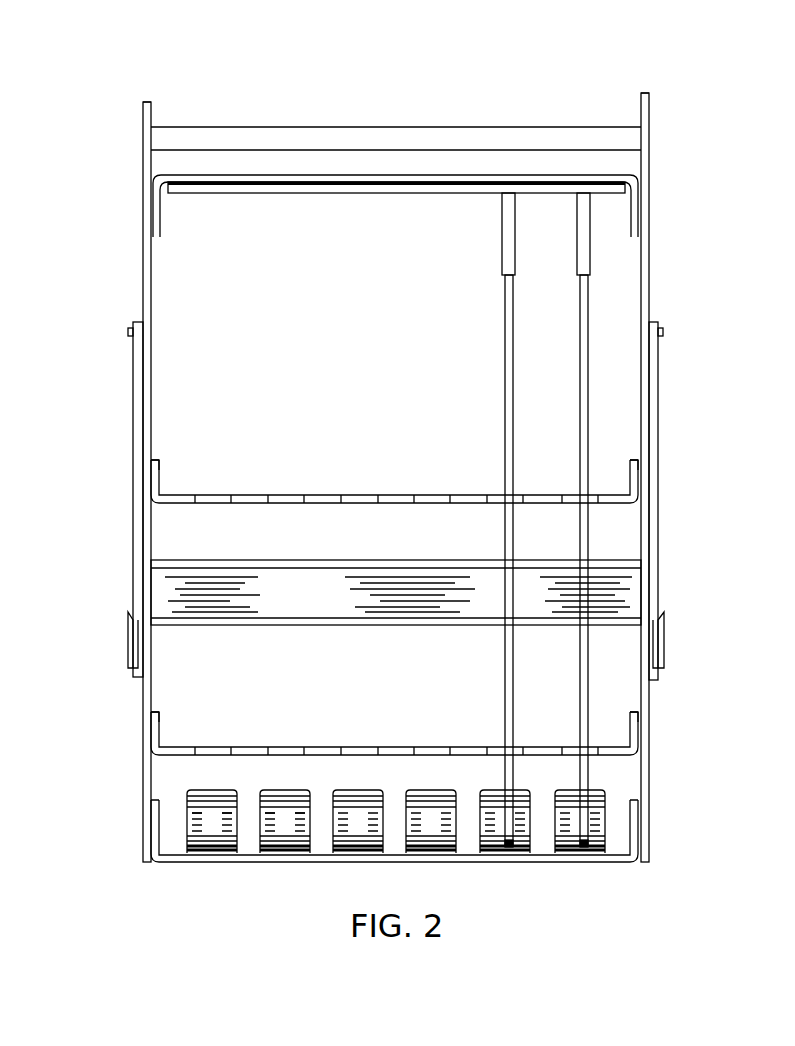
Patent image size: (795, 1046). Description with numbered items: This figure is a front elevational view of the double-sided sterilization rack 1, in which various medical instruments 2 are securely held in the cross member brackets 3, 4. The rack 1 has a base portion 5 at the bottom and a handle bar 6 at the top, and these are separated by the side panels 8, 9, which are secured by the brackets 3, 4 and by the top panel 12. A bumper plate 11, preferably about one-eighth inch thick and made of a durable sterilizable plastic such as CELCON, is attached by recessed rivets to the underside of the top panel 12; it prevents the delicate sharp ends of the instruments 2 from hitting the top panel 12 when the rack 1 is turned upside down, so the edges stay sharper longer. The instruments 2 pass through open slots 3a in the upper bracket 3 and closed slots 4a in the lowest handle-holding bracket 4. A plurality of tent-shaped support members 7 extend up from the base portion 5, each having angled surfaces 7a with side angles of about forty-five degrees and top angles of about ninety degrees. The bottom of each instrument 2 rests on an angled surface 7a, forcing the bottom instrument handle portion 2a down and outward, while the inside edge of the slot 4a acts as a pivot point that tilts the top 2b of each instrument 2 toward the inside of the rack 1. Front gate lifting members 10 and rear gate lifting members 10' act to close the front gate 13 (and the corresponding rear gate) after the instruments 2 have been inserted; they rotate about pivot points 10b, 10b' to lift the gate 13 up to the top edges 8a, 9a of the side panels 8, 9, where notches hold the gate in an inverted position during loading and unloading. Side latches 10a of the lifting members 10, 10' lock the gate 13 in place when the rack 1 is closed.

The sterilization rack 1 is at (700, 324).
The medical instrument 2 is at (505, 395).
The bottom instrument handle portion 2a is at (506, 845).
The top of instrument 2b is at (505, 242).
The cross member bracket 3 is at (633, 498).
The open slot 3a is at (215, 490).
The cross member bracket 4 is at (636, 735).
The closed slot 4a is at (200, 745).
The base portion 5 is at (540, 862).
The handle bar 6 is at (495, 128).
The support member 7 is at (210, 793).
The angled surface 7a is at (290, 815).
The side panel 8 is at (143, 262).
The top edge of side member 8a is at (148, 103).
The side panel 9 is at (651, 237).
The top edge of side member 9a is at (645, 94).
The front gate lifting member 10 is at (92, 499).
The rear gate lifting member 10' is at (722, 501).
The side latch 10a is at (128, 636).
The pivot point 10b is at (83, 339).
The pivot point 10b' is at (724, 349).
The bumper plate 11 is at (212, 196).
The top panel 12 is at (592, 176).
The front gate 13 is at (636, 595).